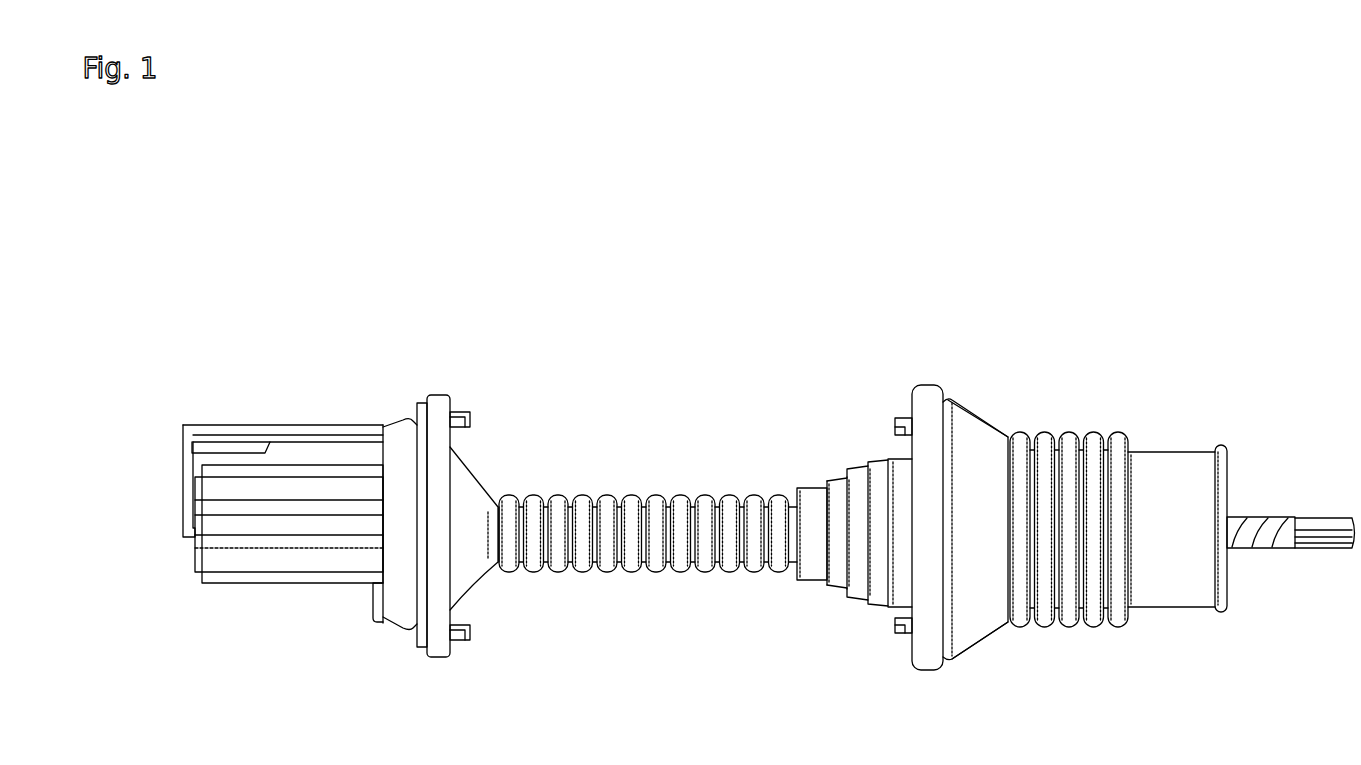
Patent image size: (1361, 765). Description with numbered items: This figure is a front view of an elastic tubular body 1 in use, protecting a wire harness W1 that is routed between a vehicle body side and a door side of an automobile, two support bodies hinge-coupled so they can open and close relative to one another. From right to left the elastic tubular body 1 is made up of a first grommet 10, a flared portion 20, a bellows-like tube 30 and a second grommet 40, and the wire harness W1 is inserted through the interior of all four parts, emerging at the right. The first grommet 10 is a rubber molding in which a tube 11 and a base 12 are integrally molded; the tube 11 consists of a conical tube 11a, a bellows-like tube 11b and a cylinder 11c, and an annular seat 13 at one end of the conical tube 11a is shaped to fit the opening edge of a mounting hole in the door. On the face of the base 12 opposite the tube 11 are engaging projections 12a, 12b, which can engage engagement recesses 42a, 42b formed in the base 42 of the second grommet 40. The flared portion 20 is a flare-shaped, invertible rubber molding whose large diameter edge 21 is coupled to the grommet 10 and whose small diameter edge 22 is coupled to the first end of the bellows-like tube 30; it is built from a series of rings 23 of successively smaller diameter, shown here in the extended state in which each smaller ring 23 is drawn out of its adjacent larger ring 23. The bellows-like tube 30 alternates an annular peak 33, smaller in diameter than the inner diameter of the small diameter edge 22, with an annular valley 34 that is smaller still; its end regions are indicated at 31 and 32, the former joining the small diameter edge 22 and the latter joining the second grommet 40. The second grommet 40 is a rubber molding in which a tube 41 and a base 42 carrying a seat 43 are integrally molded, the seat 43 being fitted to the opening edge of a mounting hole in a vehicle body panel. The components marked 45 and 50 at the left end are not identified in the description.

The elastic tubular body 1 is at (1014, 228).
The first grommet 10 is at (1042, 309).
The tube 11 is at (978, 363).
The conical tube 11a is at (990, 425).
The bellows-like tube 11b is at (1078, 432).
The cylinder 11c is at (1170, 452).
The base 12 is at (926, 370).
The engaging projection 12a is at (897, 418).
The engaging projection 12b is at (896, 633).
The annular seat 13 is at (950, 400).
The flared portion 20 is at (838, 396).
The large diameter edge 21 is at (901, 459).
The small diameter edge 22 is at (810, 488).
The rings 23 is at (838, 493).
The bellows-like tube 30 is at (646, 512).
The end portion of corrugated tube 31 is at (793, 572).
The end portion of corrugated tube 32 is at (500, 565).
The annular peak 33 is at (607, 495).
The annular valley 34 is at (645, 496).
The second grommet 40 is at (428, 359).
The tube 41 is at (483, 462).
The base 42 is at (449, 381).
The engagement recess 42a is at (462, 412).
The engagement recess 42b is at (462, 640).
The seat 43 is at (419, 402).
The connector body 45 is at (263, 425).
The mating connector 50 is at (297, 572).
The wire harness W1 is at (1266, 517).